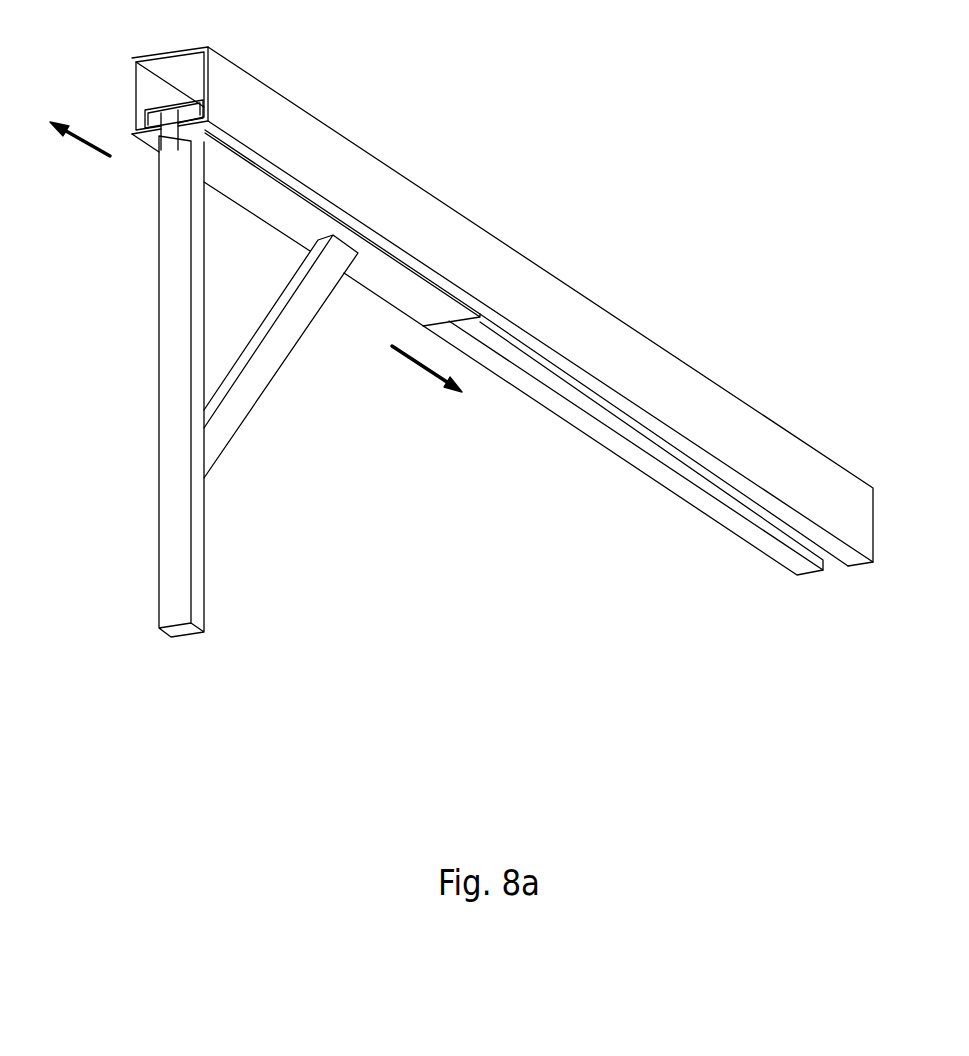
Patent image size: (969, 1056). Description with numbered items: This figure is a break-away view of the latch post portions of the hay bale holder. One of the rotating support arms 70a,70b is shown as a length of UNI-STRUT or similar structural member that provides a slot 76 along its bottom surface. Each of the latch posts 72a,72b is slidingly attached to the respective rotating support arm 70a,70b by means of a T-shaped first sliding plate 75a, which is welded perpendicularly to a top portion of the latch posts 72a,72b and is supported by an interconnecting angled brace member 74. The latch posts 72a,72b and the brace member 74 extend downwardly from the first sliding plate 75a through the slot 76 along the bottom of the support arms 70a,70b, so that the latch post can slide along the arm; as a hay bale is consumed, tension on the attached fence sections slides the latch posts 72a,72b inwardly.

The rotating support arms 70a,70b is at (350, 140).
The latch posts 72a,72b is at (182, 474).
The brace member 74 is at (286, 331).
The first sliding plate 75a is at (413, 290).
The slot 76 is at (150, 120).